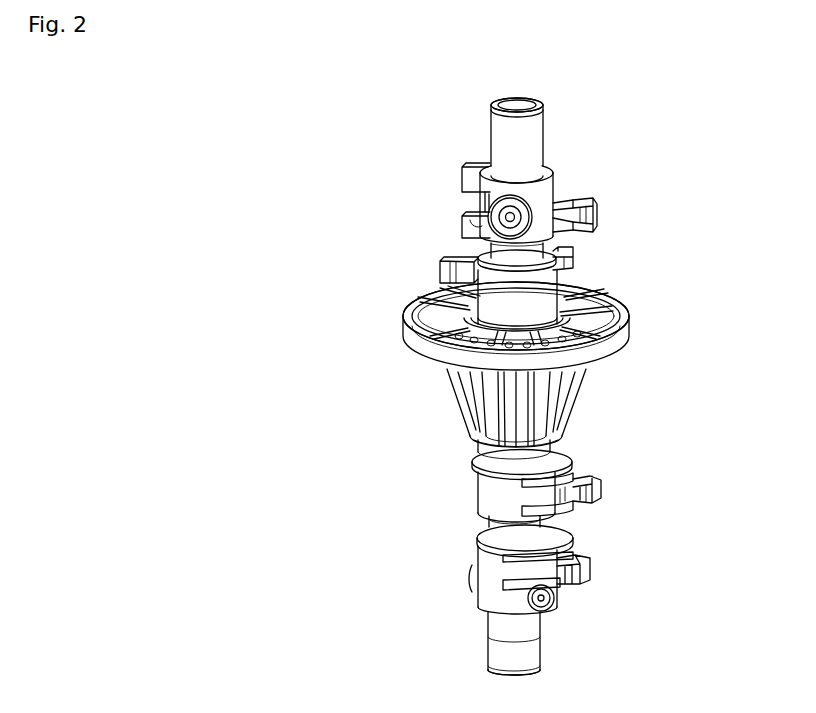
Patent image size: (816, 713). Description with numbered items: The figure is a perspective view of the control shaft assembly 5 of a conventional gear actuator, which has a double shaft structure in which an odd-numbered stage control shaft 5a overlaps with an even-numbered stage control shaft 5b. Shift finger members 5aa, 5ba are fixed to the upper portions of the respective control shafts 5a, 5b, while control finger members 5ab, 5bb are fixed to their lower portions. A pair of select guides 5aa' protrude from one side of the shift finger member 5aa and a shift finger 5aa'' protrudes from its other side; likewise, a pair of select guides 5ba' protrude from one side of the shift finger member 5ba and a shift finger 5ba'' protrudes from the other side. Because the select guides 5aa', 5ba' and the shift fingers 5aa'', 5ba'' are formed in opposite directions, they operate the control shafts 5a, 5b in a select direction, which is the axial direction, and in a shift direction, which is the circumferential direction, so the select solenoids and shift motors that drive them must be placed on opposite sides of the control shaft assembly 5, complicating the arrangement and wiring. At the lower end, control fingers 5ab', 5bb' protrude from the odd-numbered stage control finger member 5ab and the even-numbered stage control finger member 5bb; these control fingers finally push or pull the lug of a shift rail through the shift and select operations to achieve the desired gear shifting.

The control shaft assembly 5 is at (582, 106).
The odd-numbered stage control shaft 5a is at (498, 132).
The shift finger member 5aa is at (564, 205).
The select guides 5aa' is at (426, 200).
The shift finger 5aa'' is at (619, 215).
The shift finger member 5ba is at (477, 358).
The select guides 5ba' is at (580, 259).
The shift finger 5ba'' is at (420, 270).
The even-numbered stage control shaft 5b is at (496, 452).
The even-numbered stage control finger member 5bb is at (472, 499).
The control finger 5bb' is at (596, 494).
The odd-numbered stage control finger member 5ab is at (489, 600).
The control finger 5ab' is at (613, 585).